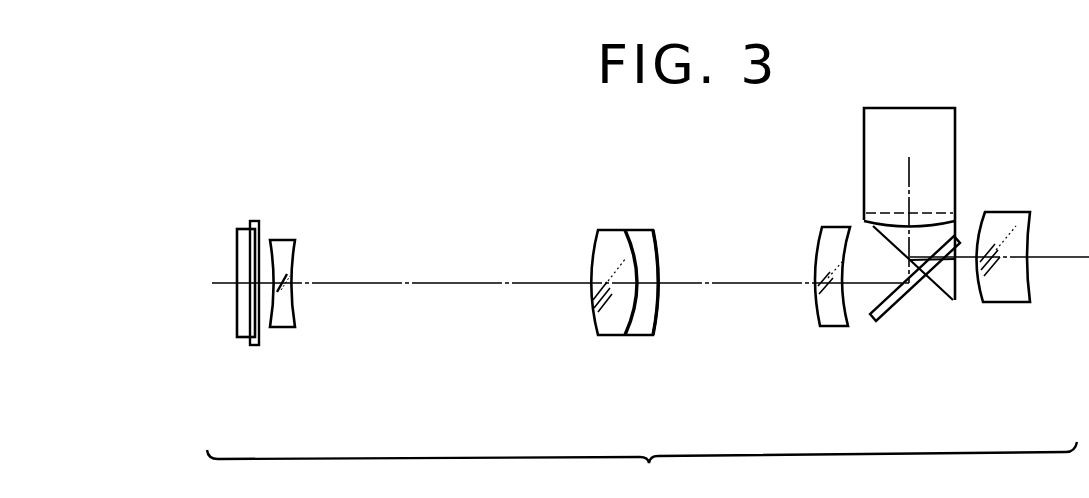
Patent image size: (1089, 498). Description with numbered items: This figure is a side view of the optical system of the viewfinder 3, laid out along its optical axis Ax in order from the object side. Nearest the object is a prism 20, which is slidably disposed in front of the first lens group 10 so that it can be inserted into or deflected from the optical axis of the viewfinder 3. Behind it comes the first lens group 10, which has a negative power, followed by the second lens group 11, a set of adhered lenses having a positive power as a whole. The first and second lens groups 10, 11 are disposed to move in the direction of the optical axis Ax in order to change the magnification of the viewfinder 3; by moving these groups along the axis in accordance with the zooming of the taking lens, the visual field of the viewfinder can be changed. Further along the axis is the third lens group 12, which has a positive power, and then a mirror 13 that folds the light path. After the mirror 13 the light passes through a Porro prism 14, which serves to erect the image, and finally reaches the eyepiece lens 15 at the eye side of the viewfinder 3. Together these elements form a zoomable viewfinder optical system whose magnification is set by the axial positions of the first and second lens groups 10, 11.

The viewfinder 3 is at (642, 469).
The first lens group 10 is at (282, 328).
The second lens group 11 is at (637, 325).
The third lens group 12 is at (835, 318).
The mirror 13 is at (895, 300).
The Porro prism 14 is at (945, 123).
The eyepiece lens 15 is at (1012, 213).
The prism 20 is at (245, 333).
The optical axis Ax is at (406, 283).